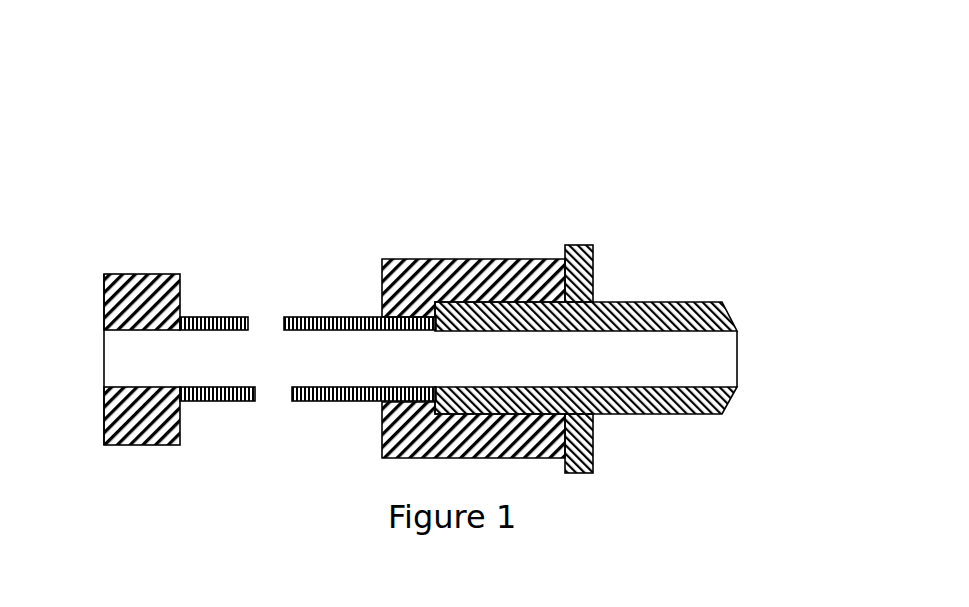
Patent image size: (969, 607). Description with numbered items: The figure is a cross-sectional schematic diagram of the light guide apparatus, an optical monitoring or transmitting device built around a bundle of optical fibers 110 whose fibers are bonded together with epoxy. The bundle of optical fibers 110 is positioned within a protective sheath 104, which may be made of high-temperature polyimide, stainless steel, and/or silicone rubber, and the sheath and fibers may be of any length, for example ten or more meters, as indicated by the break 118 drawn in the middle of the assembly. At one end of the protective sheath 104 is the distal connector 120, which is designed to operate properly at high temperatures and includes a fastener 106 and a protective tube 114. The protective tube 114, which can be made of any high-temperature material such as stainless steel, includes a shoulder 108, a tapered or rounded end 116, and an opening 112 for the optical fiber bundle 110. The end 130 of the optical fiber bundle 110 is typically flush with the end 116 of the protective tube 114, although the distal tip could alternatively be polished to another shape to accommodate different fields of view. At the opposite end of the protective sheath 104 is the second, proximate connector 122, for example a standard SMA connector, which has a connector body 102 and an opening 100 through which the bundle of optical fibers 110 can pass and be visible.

The opening 100 is at (95, 343).
The connector body 102 is at (152, 279).
The protective sheath 104 is at (325, 322).
The fastener 106 is at (410, 262).
The shoulder 108 is at (592, 270).
The bundle of optical fibers 110 is at (511, 357).
The opening 112 is at (770, 311).
The protective tube 114 is at (682, 306).
The tapered or rounded end 116 is at (730, 309).
The break 118 is at (277, 430).
The distal connector 120 is at (555, 216).
The proximate connector 122 is at (89, 430).
The end of the optical fiber bundle 130 is at (739, 361).